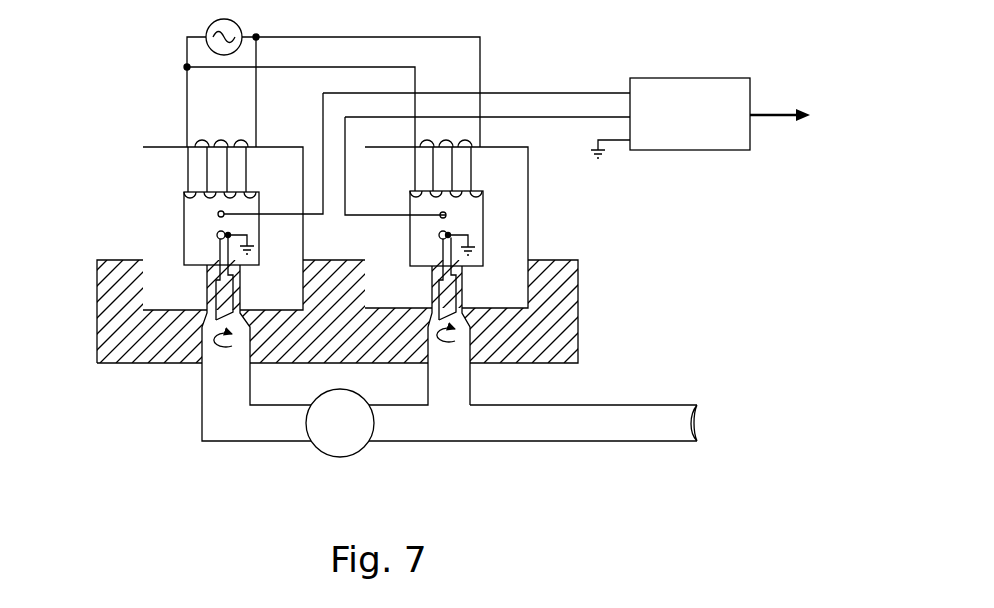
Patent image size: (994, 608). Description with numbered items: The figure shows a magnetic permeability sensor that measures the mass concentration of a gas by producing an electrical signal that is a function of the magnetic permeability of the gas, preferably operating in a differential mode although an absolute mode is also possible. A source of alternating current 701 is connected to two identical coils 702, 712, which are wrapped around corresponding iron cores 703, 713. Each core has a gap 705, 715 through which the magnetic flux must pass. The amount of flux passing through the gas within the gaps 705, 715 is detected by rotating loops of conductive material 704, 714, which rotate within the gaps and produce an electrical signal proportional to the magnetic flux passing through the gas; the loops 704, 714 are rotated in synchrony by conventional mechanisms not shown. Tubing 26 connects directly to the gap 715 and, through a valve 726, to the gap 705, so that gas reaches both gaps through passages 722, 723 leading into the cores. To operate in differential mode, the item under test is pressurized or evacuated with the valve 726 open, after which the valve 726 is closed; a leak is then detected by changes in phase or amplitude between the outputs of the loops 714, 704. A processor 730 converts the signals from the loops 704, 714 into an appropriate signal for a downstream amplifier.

The source of alternating current 701 is at (208, 31).
The coil 702 is at (188, 145).
The iron core 703 is at (142, 196).
The rotating loop of conductive material 704 is at (235, 290).
The gap 705 is at (213, 275).
The coil 712 is at (412, 147).
The iron core 713 is at (529, 183).
The rotating loop of conductive material 714 is at (458, 292).
The gap 715 is at (435, 273).
The first flow passage 722 is at (226, 364).
The second flow passage 723 is at (447, 352).
The valve 726 is at (333, 456).
The processor 730 is at (697, 151).
The tubing 26 is at (698, 405).